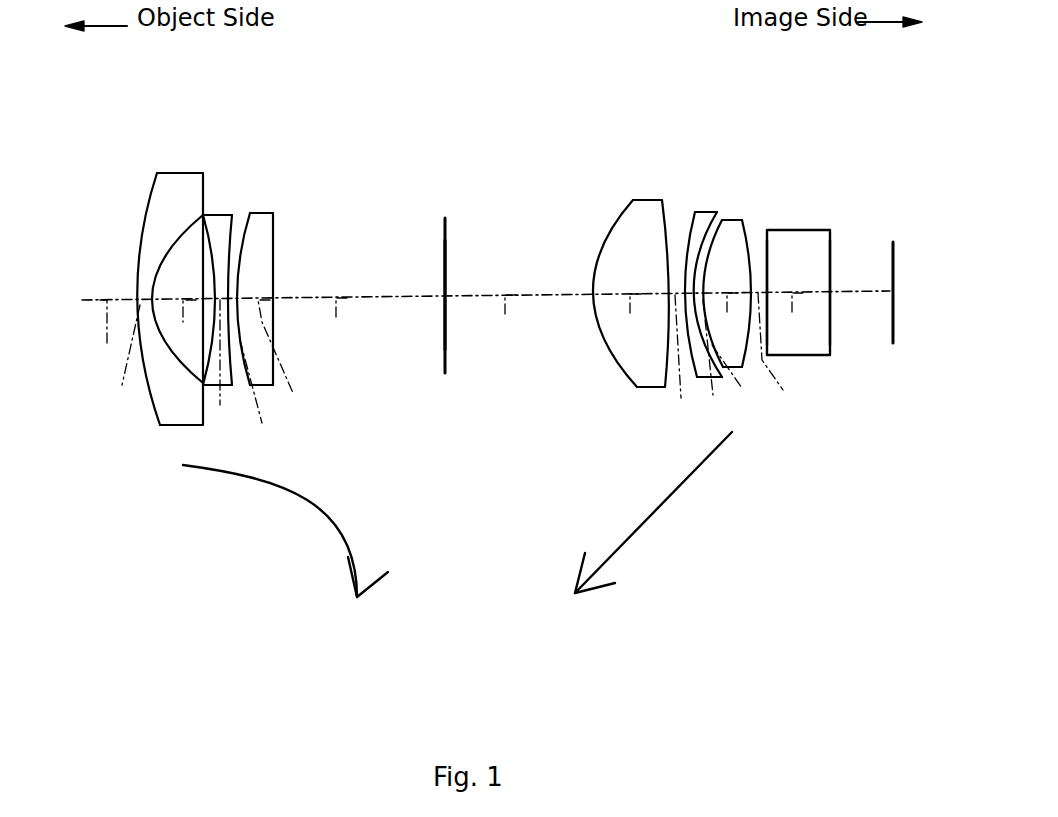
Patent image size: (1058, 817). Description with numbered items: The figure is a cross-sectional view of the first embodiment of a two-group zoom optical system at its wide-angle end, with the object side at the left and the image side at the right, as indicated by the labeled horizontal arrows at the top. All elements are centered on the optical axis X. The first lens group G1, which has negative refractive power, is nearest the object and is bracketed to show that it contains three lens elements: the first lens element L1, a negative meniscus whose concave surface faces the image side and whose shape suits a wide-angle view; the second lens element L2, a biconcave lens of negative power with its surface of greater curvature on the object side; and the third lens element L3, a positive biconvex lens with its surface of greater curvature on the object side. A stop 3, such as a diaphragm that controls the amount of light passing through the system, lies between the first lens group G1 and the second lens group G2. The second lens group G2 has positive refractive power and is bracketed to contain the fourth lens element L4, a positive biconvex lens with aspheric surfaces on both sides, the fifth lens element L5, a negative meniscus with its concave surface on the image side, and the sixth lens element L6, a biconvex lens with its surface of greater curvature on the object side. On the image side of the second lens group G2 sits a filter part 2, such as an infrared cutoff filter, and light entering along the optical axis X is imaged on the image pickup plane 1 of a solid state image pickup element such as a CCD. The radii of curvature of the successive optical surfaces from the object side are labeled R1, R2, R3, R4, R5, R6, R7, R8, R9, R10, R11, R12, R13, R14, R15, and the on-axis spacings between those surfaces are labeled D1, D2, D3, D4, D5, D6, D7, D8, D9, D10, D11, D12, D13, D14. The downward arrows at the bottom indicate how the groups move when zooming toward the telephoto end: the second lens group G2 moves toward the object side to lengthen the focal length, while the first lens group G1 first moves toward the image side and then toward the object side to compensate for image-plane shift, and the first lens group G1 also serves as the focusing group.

The first lens group G1 is at (278, 105).
The second lens group G2 is at (748, 125).
The first lens element L1 is at (147, 264).
The second lens element L2 is at (218, 264).
The third lens element L3 is at (283, 264).
The fourth lens element L4 is at (616, 258).
The fifth lens element L5 is at (710, 258).
The sixth lens element L6 is at (758, 251).
The radius of curvature of first surface R1 is at (137, 266).
The radius of curvature of second surface R2 is at (152, 310).
The radius of curvature of third surface R3 is at (214, 290).
The radius of curvature of fourth surface R4 is at (229, 275).
The radius of curvature of fifth surface R5 is at (240, 292).
The radius of curvature of sixth surface R6 is at (276, 288).
The radius of curvature of seventh surface R7 is at (445, 268).
The radius of curvature of eighth surface R8 is at (600, 290).
The radius of curvature of ninth surface R9 is at (672, 278).
The radius of curvature of tenth surface R10 is at (682, 278).
The radius of curvature of eleventh surface R11 is at (698, 280).
The radius of curvature of twelfth surface R12 is at (710, 290).
The radius of curvature of thirteenth surface R13 is at (758, 288).
The radius of curvature of fourteenth surface R14 is at (768, 286).
The radius of curvature of fifteenth surface R15 is at (830, 286).
The first on-axis surface spacing D1 is at (133, 362).
The second on-axis surface spacing D2 is at (187, 327).
The third on-axis surface spacing D3 is at (233, 369).
The fourth on-axis surface spacing D4 is at (261, 399).
The fifth on-axis surface spacing D5 is at (288, 365).
The sixth on-axis surface spacing D6 is at (347, 325).
The seventh on-axis surface spacing D7 is at (508, 323).
The eighth on-axis surface spacing D8 is at (635, 320).
The ninth on-axis surface spacing D9 is at (690, 363).
The tenth on-axis surface spacing D10 is at (725, 364).
The eleventh on-axis surface spacing D11 is at (746, 383).
The twelfth on-axis surface spacing D12 is at (733, 318).
The thirteenth on-axis surface spacing D13 is at (792, 356).
The fourteenth on-axis surface spacing D14 is at (800, 321).
The optical axis X is at (104, 336).
The image pickup plane 1 is at (892, 243).
The filter part 2 is at (802, 232).
The stop 3 is at (446, 240).